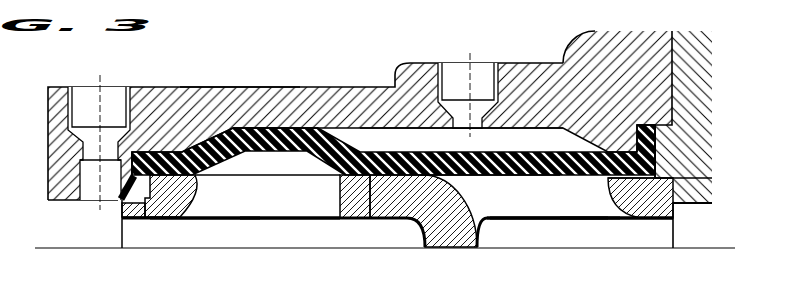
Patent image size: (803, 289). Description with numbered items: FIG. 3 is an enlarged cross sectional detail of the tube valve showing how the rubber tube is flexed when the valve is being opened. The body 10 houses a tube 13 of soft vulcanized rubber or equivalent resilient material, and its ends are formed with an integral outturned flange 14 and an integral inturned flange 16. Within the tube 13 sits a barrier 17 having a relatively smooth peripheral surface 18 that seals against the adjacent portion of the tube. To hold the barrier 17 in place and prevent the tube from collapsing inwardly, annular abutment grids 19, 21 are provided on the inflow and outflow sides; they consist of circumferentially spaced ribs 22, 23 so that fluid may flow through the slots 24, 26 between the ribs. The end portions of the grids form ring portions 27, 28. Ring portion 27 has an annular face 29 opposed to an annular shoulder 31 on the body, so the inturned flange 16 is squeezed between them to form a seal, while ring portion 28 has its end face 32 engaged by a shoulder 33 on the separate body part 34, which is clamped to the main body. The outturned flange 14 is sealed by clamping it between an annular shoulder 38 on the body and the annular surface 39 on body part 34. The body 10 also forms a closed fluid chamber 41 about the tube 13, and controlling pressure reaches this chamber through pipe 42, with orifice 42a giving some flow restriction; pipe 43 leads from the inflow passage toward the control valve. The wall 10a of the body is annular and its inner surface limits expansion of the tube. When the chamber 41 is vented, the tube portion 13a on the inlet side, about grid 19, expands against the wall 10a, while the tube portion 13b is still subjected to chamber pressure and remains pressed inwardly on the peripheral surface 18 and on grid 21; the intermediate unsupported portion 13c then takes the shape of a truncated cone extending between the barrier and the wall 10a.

The body 10 is at (202, 88).
The wall 10a is at (240, 97).
The tube 13 is at (359, 150).
The tube portion 13a is at (274, 127).
The tube portion 13b is at (500, 176).
The intermediate unsupported tube portion 13c is at (327, 176).
The outturned flange 14 is at (656, 139).
The inturned flange 16 is at (117, 200).
The barrier 17 is at (442, 242).
The peripheral surface 18 is at (360, 219).
The annular abutment grid 19 is at (242, 219).
The annular abutment grid 21 is at (528, 222).
The ribs 22 is at (208, 220).
The ribs 23 is at (588, 222).
The slots 24 is at (278, 210).
The slots 26 is at (558, 210).
The annular ring portion 27 is at (177, 219).
The annular ring portion 28 is at (640, 219).
The annular face 29 is at (155, 218).
The annular shoulder 31 is at (133, 150).
The end face 32 is at (673, 219).
The shoulder 33 is at (673, 181).
The separate body part 34 is at (698, 89).
The annular shoulder 38 is at (565, 54).
The annular surface 39 is at (656, 155).
The fluid chamber 41 is at (407, 138).
The pipe 42 is at (452, 68).
The orifice 42a is at (484, 97).
The pipe 43 is at (112, 98).